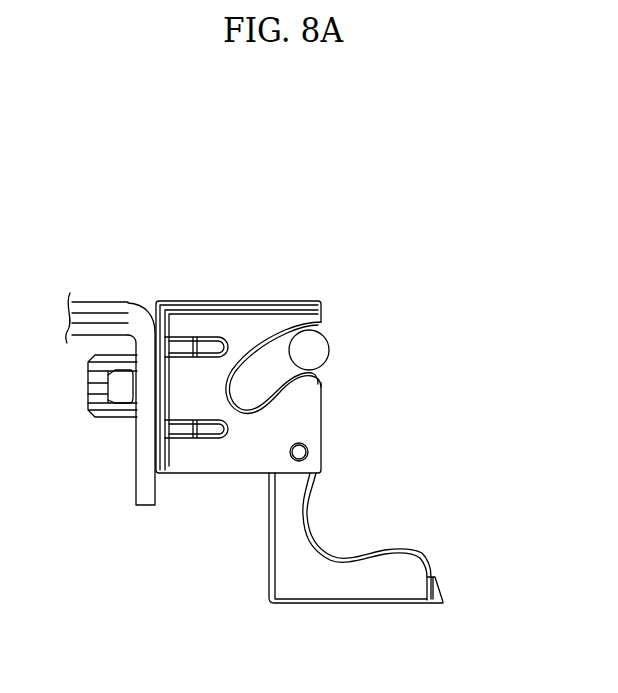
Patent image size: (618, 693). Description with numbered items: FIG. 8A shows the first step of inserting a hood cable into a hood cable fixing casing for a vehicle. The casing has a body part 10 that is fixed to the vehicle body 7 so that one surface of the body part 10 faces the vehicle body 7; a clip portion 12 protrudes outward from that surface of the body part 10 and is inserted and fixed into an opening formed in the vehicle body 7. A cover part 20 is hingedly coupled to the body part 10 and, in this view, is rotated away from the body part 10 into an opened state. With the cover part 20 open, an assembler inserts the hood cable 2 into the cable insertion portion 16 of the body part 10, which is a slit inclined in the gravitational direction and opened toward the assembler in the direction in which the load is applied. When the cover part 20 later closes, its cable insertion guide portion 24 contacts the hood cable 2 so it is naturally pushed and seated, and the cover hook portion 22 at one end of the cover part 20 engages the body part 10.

The hood cable 2 is at (329, 350).
The vehicle body 7 is at (140, 302).
The body part 10 is at (301, 389).
The clip portion 12 is at (90, 424).
The cable insertion portion 16 is at (257, 383).
The cover part 20 is at (321, 560).
The cover hook portion 22 is at (435, 583).
The cable insertion guide portion 24 is at (335, 531).